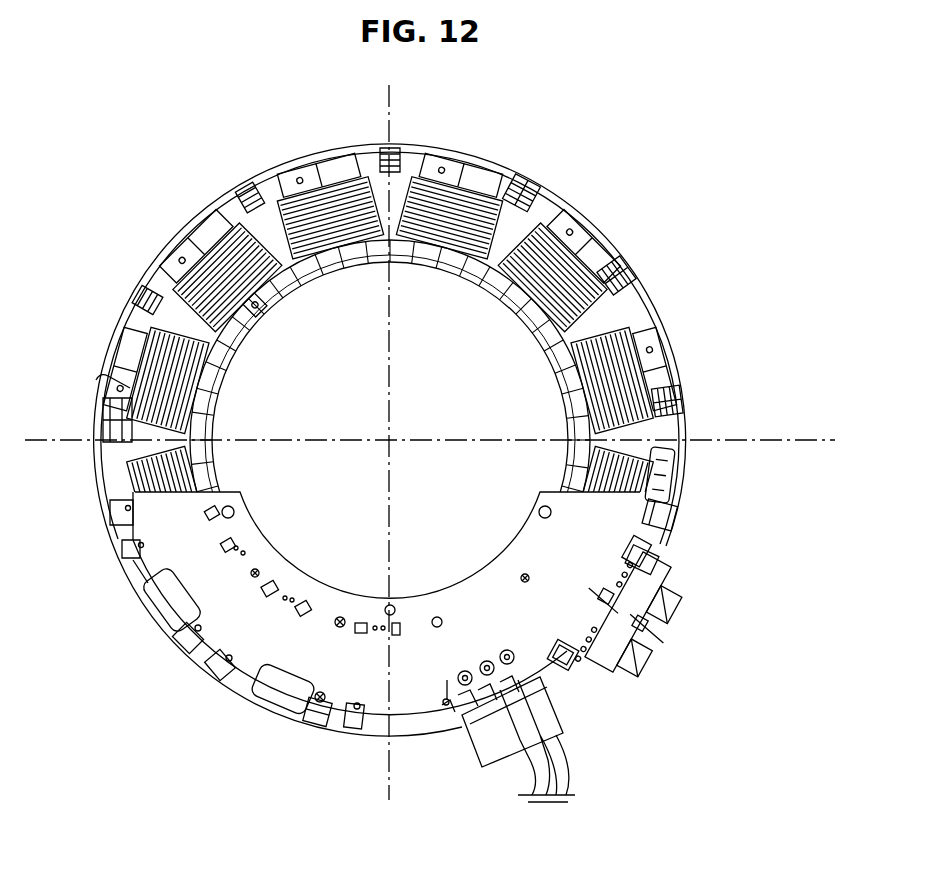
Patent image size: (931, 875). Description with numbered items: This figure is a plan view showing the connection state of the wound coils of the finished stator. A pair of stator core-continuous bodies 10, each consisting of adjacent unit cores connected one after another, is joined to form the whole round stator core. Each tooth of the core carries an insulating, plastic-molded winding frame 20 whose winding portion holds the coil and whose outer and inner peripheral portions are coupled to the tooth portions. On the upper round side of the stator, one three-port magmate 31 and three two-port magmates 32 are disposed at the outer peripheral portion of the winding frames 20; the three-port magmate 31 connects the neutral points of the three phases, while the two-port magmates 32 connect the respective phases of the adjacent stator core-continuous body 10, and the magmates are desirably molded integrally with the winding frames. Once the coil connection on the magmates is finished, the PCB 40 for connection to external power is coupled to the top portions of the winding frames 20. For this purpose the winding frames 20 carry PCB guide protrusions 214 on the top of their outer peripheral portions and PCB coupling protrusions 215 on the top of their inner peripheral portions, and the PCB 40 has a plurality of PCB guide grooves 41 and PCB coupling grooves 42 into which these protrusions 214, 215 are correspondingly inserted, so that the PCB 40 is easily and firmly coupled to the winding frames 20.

The stator core-continuous body 10 is at (140, 298).
The winding frame 20 is at (176, 265).
The three-port magmate 31 is at (98, 383).
The two-port magmate 32 is at (520, 188).
The PCB coupling protrusion 215 is at (262, 312).
The PCB 40 is at (270, 648).
The PCB guide groove 41 is at (323, 720).
The PCB coupling groove 42 is at (339, 616).
The PCB guide protrusion 214 is at (316, 712).